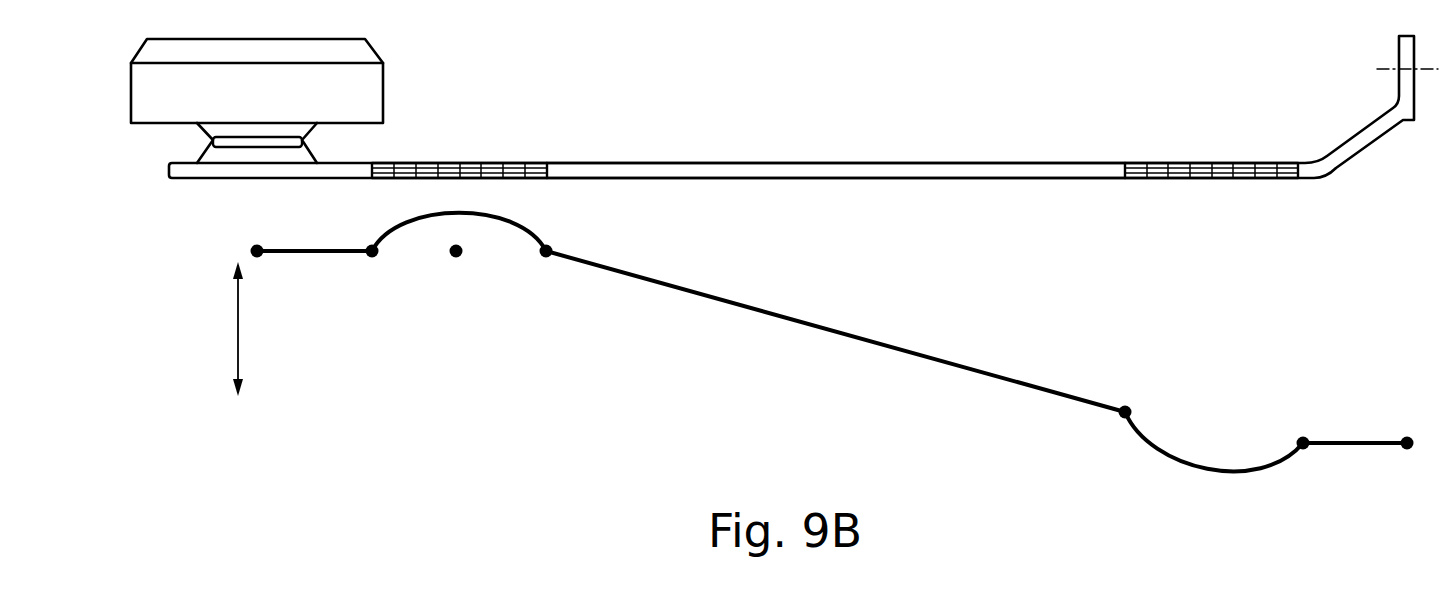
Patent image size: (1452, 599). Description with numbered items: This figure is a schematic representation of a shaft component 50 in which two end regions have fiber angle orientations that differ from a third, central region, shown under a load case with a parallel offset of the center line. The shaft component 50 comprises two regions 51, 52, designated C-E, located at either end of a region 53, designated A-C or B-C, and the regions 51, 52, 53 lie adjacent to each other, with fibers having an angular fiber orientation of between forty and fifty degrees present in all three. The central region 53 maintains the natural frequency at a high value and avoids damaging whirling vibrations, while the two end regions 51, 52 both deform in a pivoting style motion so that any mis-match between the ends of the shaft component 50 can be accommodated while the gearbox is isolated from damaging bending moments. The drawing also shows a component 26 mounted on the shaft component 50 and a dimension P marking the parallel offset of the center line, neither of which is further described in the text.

The sensor module 26 is at (167, 141).
The shaft component 50 is at (803, 107).
The region 51 is at (503, 163).
The region 52 is at (1250, 170).
The central region 53 is at (1027, 170).
The pitch dimension P is at (238, 313).